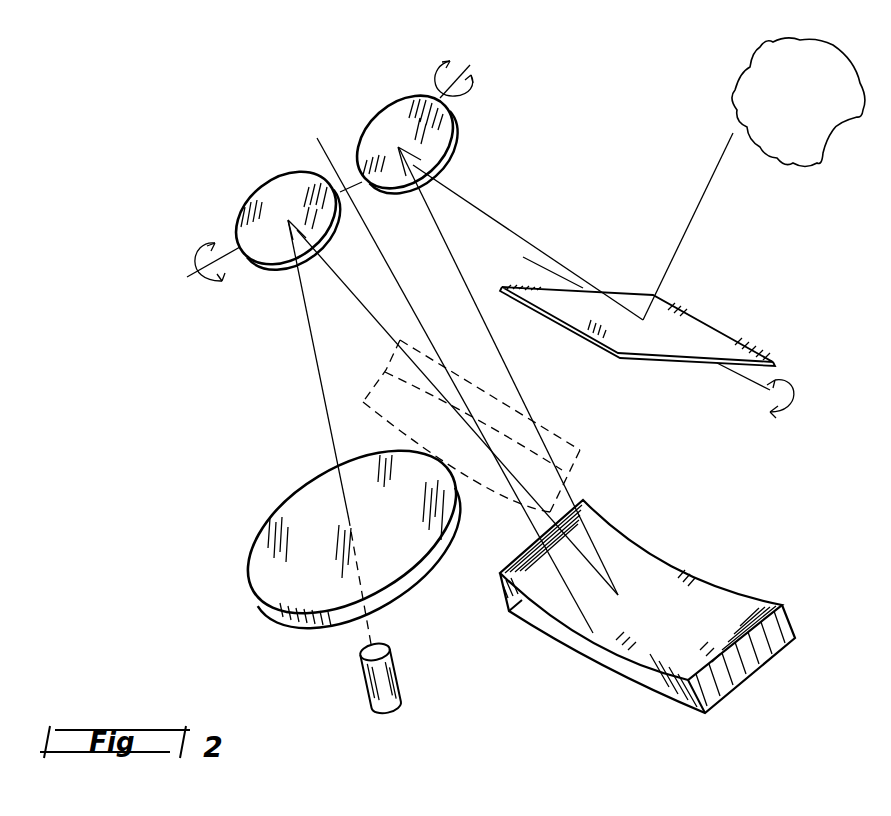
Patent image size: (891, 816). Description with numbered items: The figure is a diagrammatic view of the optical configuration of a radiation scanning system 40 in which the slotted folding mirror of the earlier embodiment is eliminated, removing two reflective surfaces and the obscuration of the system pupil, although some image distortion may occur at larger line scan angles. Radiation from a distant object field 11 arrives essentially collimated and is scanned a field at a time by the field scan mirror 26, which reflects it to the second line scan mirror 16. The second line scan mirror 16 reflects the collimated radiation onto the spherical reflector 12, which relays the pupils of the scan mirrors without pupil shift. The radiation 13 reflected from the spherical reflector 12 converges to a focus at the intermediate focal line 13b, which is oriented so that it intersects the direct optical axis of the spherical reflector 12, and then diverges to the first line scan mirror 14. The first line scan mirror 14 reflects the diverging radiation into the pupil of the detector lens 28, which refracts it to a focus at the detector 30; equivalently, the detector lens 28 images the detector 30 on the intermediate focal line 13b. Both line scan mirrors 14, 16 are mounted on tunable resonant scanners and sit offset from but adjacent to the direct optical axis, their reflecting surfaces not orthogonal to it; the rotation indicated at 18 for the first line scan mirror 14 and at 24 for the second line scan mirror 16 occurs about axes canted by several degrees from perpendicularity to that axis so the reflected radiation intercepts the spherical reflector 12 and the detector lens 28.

The object field 11 is at (813, 152).
The spherical reflector 12 is at (633, 645).
The light beam 13 is at (380, 421).
The intermediate focal line 13b is at (387, 380).
The first line scan mirror 14 is at (287, 192).
The second line scan mirror 16 is at (405, 110).
The rotation axis of first mirror 18 is at (195, 278).
The rotation axis of second mirror 24 is at (462, 64).
The field scan mirror 26 is at (645, 353).
The detector lens 28 is at (282, 590).
The detector 30 is at (397, 677).
The radiation scanning system 40 is at (814, 511).